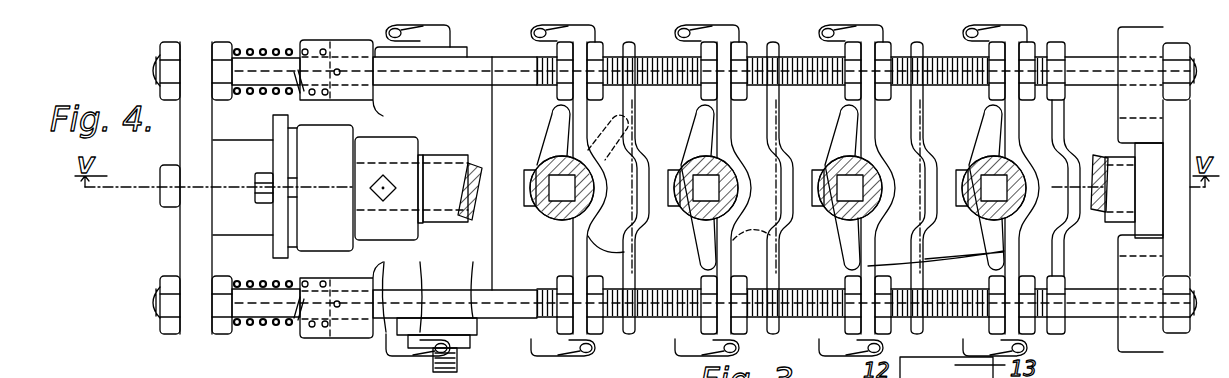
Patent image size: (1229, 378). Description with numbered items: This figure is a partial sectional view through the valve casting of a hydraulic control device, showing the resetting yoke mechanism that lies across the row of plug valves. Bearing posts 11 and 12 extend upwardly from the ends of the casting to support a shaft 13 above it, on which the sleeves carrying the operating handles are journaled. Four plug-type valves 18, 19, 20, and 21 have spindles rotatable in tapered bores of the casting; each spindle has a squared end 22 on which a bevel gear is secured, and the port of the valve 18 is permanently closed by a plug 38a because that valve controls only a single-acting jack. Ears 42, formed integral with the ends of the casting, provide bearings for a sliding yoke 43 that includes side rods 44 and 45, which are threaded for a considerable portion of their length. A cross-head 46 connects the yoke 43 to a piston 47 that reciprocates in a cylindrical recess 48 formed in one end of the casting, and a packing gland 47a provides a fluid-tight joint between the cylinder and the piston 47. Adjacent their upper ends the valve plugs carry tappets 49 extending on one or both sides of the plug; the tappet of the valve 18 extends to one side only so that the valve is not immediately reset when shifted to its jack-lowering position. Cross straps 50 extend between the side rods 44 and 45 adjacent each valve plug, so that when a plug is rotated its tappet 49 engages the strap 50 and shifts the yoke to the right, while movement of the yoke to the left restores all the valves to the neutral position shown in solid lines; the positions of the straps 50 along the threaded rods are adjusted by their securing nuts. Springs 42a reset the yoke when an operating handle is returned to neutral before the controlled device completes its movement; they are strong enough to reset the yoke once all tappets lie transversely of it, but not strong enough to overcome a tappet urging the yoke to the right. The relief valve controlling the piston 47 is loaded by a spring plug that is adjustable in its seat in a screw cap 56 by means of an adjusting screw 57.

The bearing post 11 is at (386, 143).
The bearing post 12 is at (1147, 222).
The shaft 13 is at (473, 157).
The valve plug 18 is at (539, 163).
The valve plug 19 is at (692, 220).
The valve plug 20 is at (828, 158).
The valve plug 21 is at (980, 212).
The squared end 22 is at (568, 188).
The plug 38a is at (575, 29).
The ear 42 is at (319, 48).
The spring 42a is at (278, 349).
The sliding yoke 43 is at (182, 255).
The side rod 44 is at (498, 63).
The side rod 45 is at (513, 313).
The cross-head 46 is at (193, 225).
The piston 47 is at (247, 227).
The packing gland 47a is at (283, 137).
The cylindrical recess 48 is at (311, 118).
The tappet 49 is at (557, 118).
The cross strap 50 is at (796, 249).
The screw cap 56 is at (422, 346).
The adjusting screw 57 is at (458, 365).